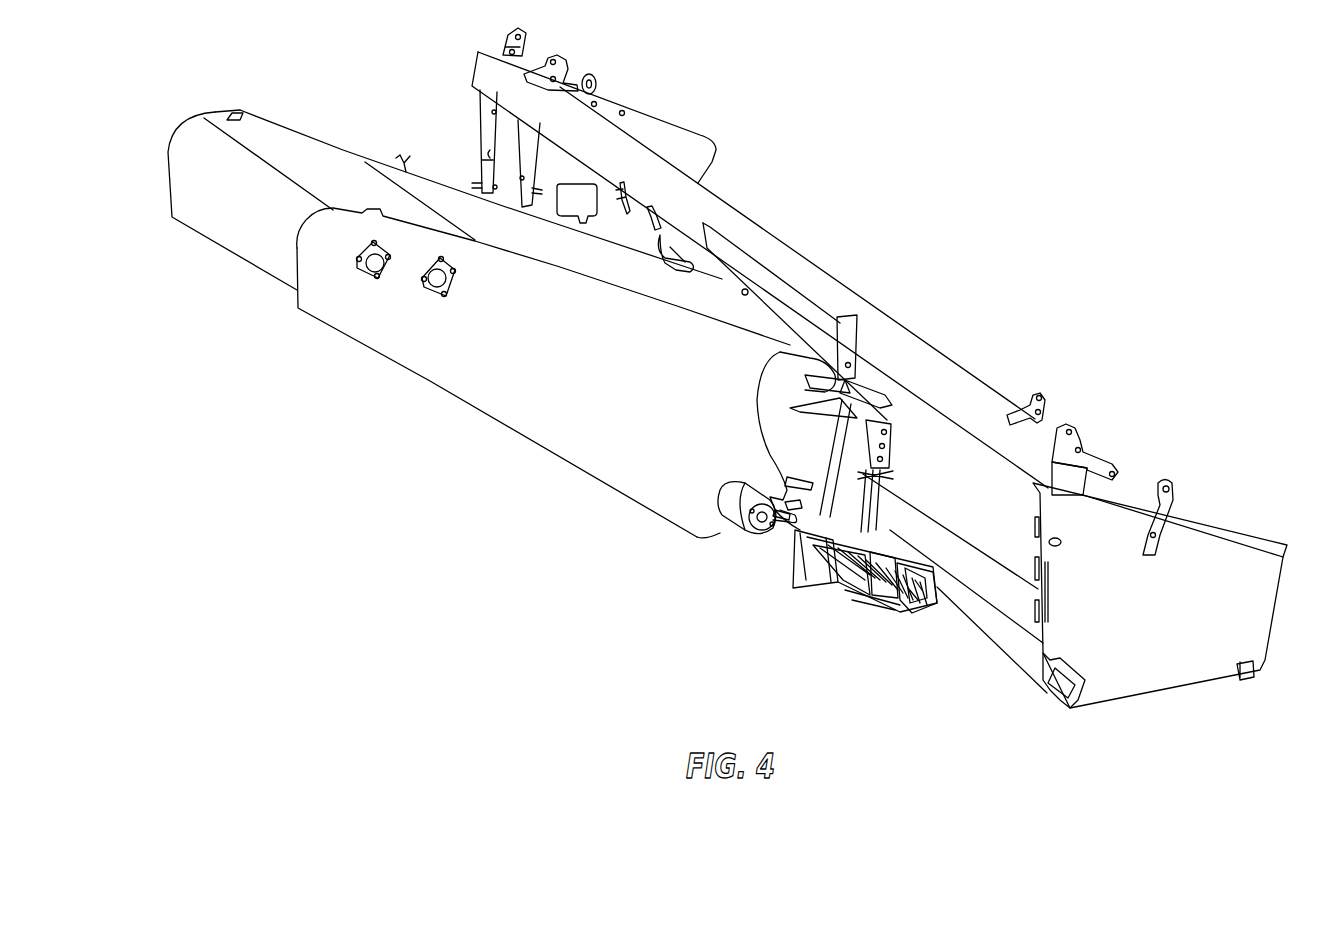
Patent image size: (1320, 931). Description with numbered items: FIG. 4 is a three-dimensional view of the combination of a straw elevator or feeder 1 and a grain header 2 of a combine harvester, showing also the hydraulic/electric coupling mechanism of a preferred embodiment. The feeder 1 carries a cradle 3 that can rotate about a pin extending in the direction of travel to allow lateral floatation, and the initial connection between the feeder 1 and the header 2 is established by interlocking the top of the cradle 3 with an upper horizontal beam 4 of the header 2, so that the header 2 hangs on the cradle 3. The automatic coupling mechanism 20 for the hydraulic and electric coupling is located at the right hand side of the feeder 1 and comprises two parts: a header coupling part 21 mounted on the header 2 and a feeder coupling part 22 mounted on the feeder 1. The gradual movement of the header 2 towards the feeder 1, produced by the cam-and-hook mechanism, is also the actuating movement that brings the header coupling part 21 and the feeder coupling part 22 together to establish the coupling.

The feeder 1 is at (481, 396).
The grain header 2 is at (1197, 543).
The cradle 3 is at (778, 287).
The upper horizontal beam 4 is at (925, 361).
The automatic coupling mechanism 20 is at (827, 578).
The header coupling part 21 is at (930, 597).
The feeder coupling part 22 is at (808, 556).